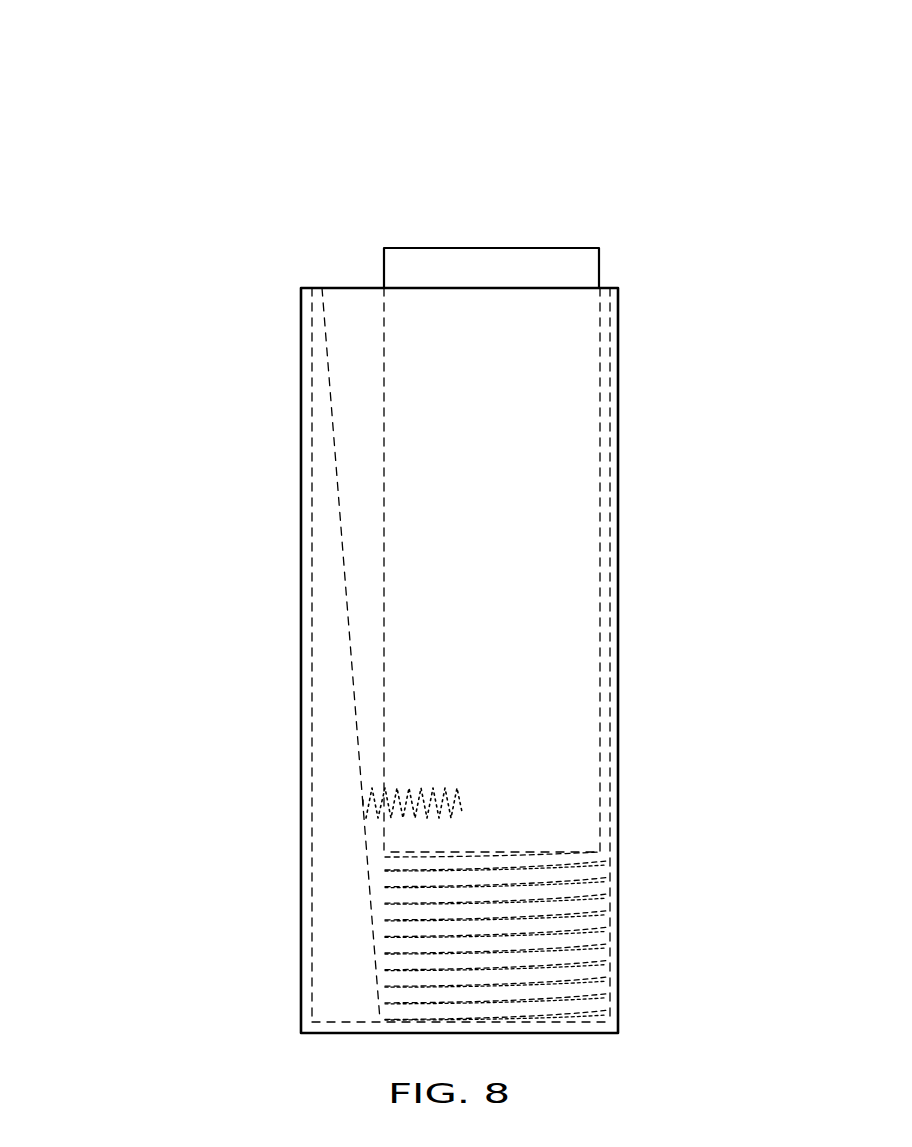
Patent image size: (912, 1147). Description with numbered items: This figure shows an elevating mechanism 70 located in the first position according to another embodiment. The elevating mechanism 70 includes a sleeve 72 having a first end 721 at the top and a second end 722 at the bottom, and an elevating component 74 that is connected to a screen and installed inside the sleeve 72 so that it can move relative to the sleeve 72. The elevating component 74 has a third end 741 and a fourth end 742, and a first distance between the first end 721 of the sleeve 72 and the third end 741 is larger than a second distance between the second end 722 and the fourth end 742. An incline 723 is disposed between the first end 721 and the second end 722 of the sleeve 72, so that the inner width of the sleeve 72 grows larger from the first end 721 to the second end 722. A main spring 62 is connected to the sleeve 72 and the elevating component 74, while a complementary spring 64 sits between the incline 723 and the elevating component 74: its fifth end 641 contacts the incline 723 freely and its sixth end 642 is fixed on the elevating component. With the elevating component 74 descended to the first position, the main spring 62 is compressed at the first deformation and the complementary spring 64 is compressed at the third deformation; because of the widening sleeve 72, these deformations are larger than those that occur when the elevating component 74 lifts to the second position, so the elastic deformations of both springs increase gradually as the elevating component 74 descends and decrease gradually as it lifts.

The elevating mechanism 70 is at (211, 69).
The sleeve 72 is at (311, 587).
The first end 721 is at (309, 288).
The second end 722 is at (362, 795).
The incline 723 is at (335, 462).
The elevating component 74 is at (610, 607).
The third end 741 is at (383, 250).
The fourth end 742 is at (566, 655).
The complementary spring 64 is at (315, 700).
The fifth end 641 is at (299, 762).
The sixth end 642 is at (459, 808).
The main spring 62 is at (583, 910).